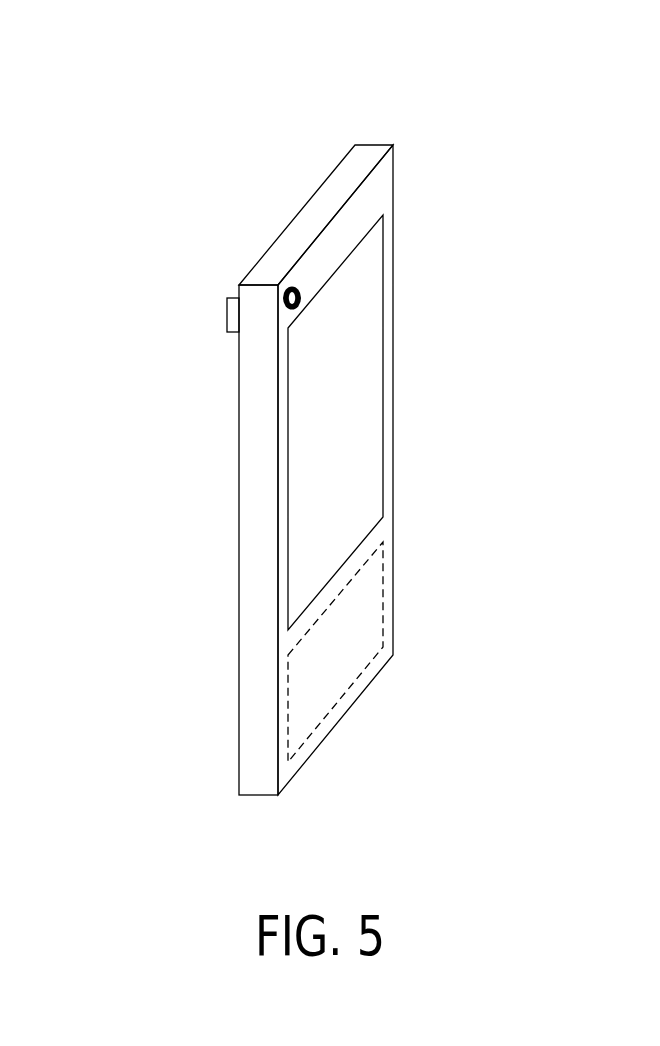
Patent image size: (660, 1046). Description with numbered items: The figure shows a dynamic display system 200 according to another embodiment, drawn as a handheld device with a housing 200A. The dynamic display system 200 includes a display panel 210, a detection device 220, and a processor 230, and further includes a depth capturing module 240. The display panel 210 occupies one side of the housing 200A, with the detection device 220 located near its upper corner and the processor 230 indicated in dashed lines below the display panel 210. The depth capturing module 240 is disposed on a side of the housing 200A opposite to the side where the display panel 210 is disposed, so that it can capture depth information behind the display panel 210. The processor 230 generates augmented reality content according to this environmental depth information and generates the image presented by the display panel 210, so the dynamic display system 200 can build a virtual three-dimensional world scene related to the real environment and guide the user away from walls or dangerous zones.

The dynamic display system 200 is at (507, 98).
The housing 200A is at (393, 189).
The display panel 210 is at (348, 405).
The detection device 220 is at (291, 286).
The processor 230 is at (348, 615).
The depth capturing module 240 is at (227, 315).